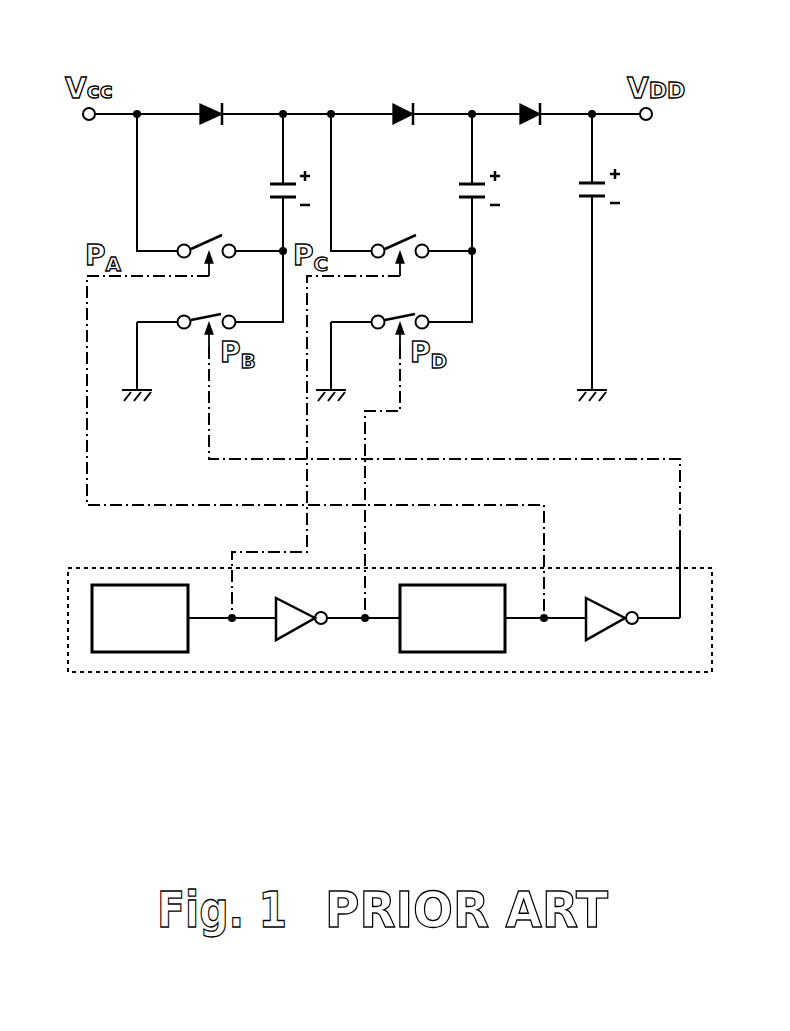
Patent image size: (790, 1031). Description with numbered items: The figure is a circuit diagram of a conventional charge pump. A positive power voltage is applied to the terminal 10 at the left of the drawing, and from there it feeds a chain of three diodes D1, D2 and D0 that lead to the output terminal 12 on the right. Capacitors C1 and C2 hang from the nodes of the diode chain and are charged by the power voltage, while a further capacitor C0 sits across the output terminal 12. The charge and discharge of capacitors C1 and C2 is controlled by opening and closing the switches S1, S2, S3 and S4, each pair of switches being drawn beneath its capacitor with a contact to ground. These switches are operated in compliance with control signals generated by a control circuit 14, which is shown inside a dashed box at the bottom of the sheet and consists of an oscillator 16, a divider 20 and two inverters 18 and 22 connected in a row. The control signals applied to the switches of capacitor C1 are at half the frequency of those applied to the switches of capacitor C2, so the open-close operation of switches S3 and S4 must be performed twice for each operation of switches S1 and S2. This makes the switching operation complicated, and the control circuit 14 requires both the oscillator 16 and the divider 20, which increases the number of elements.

The terminal 10 is at (86, 121).
The output terminal VDD 12 is at (652, 120).
The control circuit 14 is at (378, 672).
The oscillator 16 is at (144, 652).
The inverter 18 is at (296, 628).
The divider 20 is at (480, 652).
The inverter 22 is at (605, 628).
The diode D1 is at (213, 108).
The diode D2 is at (406, 108).
The diode D0 is at (533, 108).
The capacitor C1 is at (266, 190).
The capacitor C2 is at (456, 190).
The output capacitor C0 is at (610, 190).
The switch S1 is at (220, 236).
The switch S2 is at (217, 313).
The switch S3 is at (412, 236).
The switch S4 is at (408, 313).